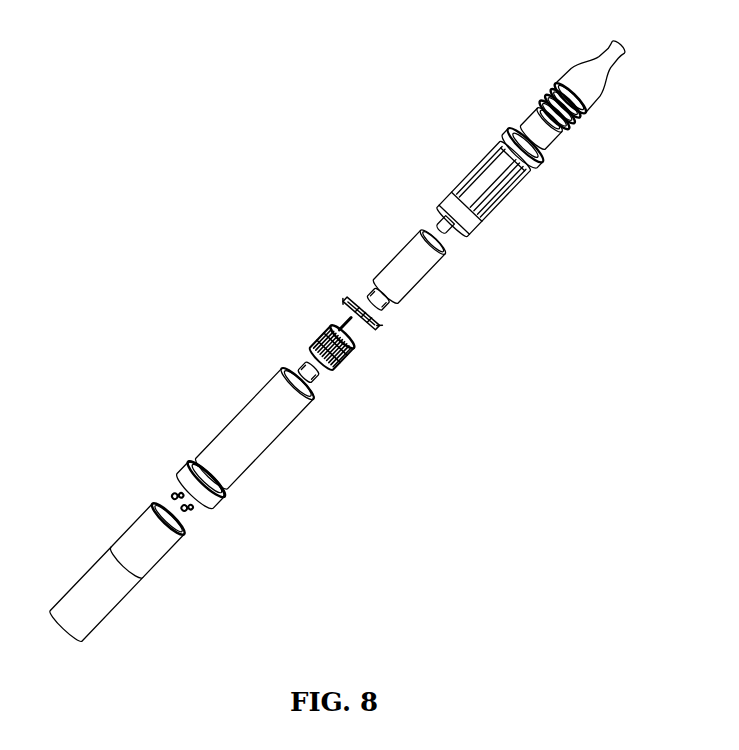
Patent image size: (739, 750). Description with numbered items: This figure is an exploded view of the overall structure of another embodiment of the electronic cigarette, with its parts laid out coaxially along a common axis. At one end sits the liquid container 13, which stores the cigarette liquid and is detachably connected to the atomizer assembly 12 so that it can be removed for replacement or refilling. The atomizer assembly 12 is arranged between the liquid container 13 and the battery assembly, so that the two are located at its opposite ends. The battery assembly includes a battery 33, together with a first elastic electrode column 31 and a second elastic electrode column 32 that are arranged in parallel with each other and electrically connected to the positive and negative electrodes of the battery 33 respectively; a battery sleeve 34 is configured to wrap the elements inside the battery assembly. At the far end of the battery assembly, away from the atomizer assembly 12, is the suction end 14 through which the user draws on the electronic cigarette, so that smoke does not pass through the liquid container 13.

The atomizer assembly 12 is at (142, 547).
The liquid container 13 is at (87, 600).
The suction end 14 is at (582, 85).
The first elastic electrode column 31 is at (177, 492).
The second elastic electrode column 32 is at (188, 510).
The battery 33 is at (398, 272).
The battery sleeve 34 is at (252, 425).